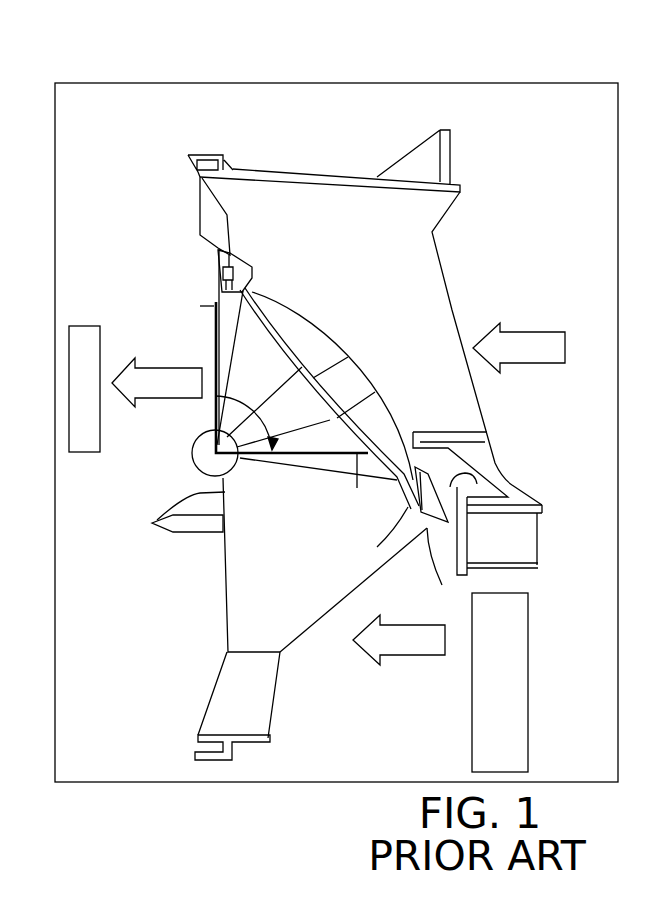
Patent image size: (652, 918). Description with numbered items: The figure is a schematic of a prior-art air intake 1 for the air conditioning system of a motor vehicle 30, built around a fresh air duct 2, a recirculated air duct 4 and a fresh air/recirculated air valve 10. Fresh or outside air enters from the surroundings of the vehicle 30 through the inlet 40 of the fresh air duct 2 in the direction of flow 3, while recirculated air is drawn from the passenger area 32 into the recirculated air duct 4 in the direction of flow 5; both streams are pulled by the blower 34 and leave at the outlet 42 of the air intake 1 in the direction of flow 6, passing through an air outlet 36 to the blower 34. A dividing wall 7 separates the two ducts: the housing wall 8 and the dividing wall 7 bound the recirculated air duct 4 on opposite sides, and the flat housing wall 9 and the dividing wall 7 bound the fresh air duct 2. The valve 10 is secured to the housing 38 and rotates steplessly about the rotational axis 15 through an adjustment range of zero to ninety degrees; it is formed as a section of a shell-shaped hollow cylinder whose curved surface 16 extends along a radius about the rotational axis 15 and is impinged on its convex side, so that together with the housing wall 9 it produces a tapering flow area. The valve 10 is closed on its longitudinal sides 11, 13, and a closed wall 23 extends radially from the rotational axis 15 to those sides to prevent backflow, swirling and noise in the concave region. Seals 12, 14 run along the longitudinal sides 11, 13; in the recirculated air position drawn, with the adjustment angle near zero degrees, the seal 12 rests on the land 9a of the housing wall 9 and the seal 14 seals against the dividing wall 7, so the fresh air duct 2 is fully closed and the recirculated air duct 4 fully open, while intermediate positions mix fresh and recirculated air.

The air intake 1 is at (528, 188).
The fresh air duct 2 is at (443, 267).
The direction of flow 3 is at (538, 332).
The recirculated air duct 4 is at (302, 625).
The direction of flow 5 is at (410, 655).
The direction of flow 6 is at (128, 405).
The dividing wall 7 is at (542, 508).
The housing wall 8 is at (268, 740).
The housing wall 9 is at (200, 157).
The land 9a is at (205, 213).
The valve 10 is at (245, 365).
The longitudinal side 11 is at (218, 290).
The seal 12 is at (230, 254).
The longitudinal side 13 is at (395, 522).
The seal 14 is at (427, 540).
The rotational axis 15 is at (195, 456).
The curved surface 16 is at (347, 358).
The closed wall 23 is at (237, 333).
The motor vehicle 30 is at (497, 83).
The passenger area 32 is at (528, 678).
The blower 34 is at (83, 326).
The air outlet 36 is at (157, 522).
The housing 38 is at (335, 172).
The inlet 40 is at (453, 295).
The outlet 42 is at (220, 268).